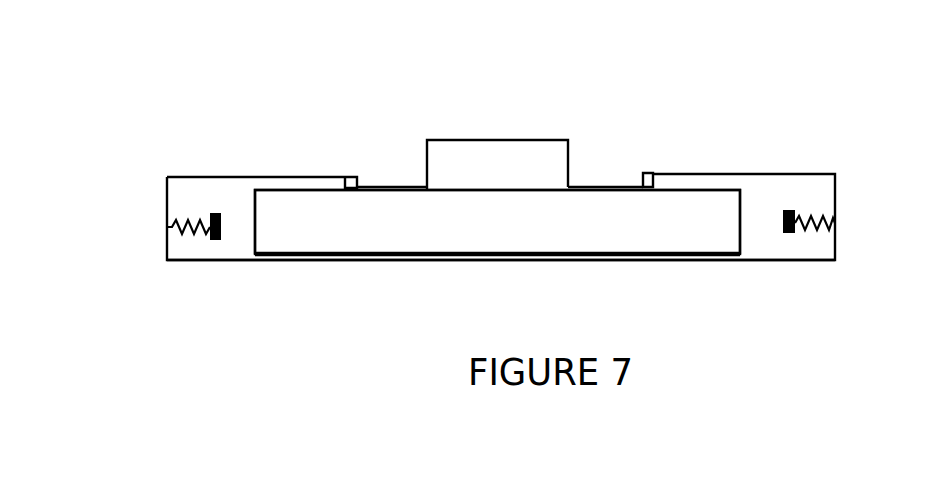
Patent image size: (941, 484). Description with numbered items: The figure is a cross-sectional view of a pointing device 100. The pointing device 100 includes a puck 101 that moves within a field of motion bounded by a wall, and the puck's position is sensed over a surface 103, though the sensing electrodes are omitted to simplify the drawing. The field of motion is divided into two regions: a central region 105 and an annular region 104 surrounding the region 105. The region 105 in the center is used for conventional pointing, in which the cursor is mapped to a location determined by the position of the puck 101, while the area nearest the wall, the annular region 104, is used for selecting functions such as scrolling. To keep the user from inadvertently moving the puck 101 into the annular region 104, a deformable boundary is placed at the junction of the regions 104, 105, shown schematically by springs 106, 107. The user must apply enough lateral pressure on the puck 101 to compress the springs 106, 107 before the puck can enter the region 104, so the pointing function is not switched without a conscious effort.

The pointing device 100 is at (181, 94).
The puck 101 is at (480, 140).
The surface 103 is at (443, 258).
The annular region 104 is at (215, 270).
The region 105 is at (787, 268).
The spring 106 is at (190, 228).
The spring 107 is at (813, 222).